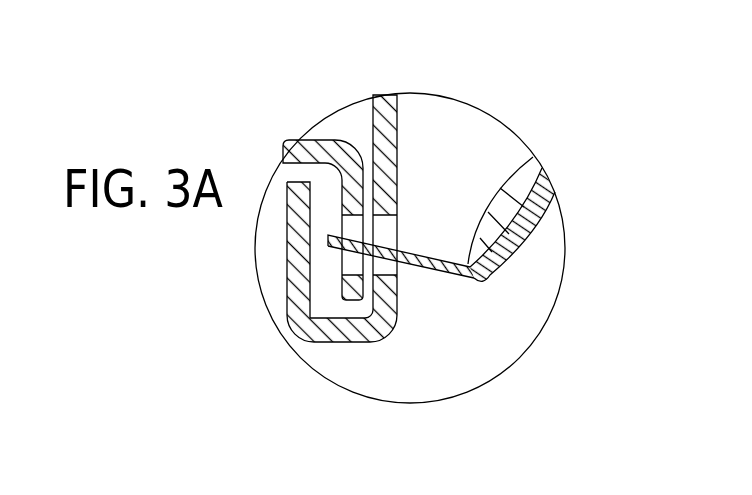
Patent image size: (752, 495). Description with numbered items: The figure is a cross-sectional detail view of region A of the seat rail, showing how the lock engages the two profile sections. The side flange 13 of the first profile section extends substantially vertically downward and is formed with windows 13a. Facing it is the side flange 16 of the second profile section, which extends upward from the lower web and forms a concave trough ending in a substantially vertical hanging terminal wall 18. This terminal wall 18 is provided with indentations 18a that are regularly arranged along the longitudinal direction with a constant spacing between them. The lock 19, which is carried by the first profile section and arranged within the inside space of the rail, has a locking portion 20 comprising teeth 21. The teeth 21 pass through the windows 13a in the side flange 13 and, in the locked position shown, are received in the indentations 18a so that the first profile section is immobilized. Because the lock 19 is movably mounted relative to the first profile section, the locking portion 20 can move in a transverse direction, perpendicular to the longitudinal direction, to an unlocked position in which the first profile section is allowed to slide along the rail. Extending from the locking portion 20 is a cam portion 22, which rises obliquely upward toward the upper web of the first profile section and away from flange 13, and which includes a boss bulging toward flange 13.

The detail region A is at (518, 139).
The side flange 13 is at (393, 122).
The window 13a is at (400, 275).
The side flange 16 is at (302, 143).
The hanging terminal wall 18 is at (355, 290).
The indentation 18a is at (347, 263).
The lock 19 is at (502, 280).
The locking portion 20 is at (460, 272).
The tooth 21 is at (356, 244).
The cam portion 22 is at (525, 232).